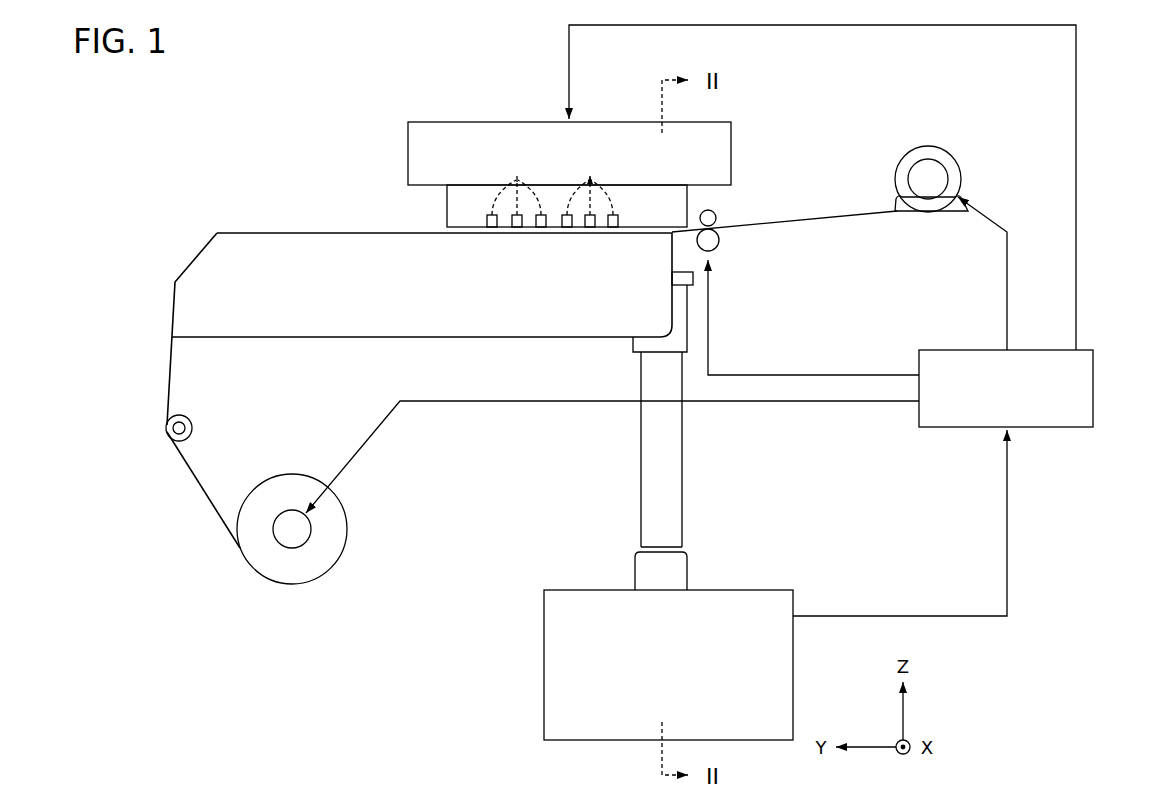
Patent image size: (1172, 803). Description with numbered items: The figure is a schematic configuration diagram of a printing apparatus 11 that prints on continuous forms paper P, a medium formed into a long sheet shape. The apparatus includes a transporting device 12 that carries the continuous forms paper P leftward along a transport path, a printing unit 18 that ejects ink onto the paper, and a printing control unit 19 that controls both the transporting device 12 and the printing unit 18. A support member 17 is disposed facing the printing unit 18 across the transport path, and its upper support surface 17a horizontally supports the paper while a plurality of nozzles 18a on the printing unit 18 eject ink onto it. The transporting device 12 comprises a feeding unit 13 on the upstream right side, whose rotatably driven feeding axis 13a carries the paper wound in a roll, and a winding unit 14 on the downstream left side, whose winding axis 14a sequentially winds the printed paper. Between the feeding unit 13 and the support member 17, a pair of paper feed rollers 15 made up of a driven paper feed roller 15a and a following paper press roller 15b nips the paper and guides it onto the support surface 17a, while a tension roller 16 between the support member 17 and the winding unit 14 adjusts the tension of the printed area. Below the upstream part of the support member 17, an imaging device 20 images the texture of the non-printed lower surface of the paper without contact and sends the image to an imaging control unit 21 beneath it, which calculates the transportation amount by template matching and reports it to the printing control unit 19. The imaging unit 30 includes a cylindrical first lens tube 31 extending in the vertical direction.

The printing apparatus 11 is at (258, 132).
The transporting device 12 is at (212, 230).
The feeding unit 13 is at (974, 201).
The feeding axis 13a is at (928, 190).
The winding unit 14 is at (286, 569).
The winding axis 14a is at (293, 540).
The pair of paper feed rollers 15 is at (766, 251).
The paper feed roller 15a is at (721, 243).
The paper press roller 15b is at (718, 218).
The tension roller 16 is at (193, 428).
The support member 17 is at (303, 344).
The support surface 17a is at (397, 232).
The printing unit 18 is at (569, 138).
The nozzles 18a is at (552, 185).
The printing control unit 19 is at (1093, 386).
The imaging device 20 is at (630, 506).
The imaging control unit 21 is at (544, 637).
The imaging unit 30 is at (687, 508).
The first lens tube 31 is at (641, 445).
The continuous forms paper P is at (172, 350).